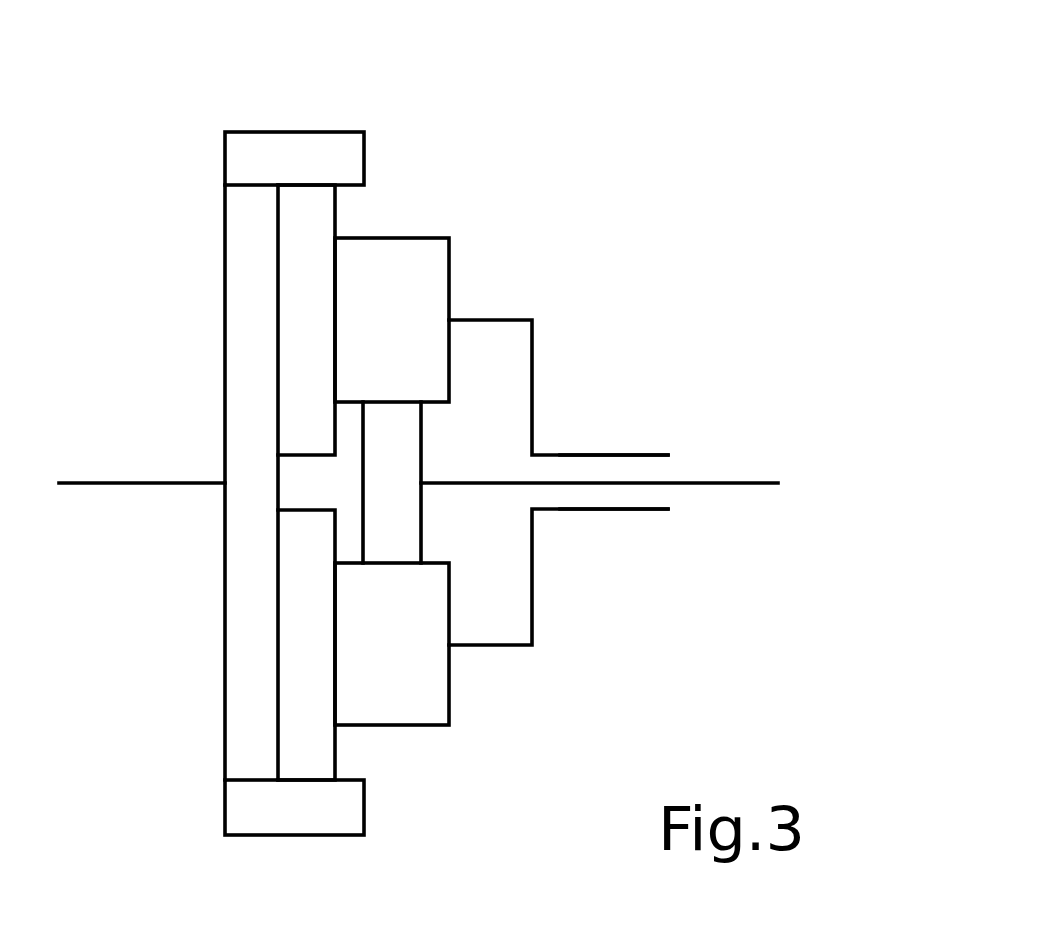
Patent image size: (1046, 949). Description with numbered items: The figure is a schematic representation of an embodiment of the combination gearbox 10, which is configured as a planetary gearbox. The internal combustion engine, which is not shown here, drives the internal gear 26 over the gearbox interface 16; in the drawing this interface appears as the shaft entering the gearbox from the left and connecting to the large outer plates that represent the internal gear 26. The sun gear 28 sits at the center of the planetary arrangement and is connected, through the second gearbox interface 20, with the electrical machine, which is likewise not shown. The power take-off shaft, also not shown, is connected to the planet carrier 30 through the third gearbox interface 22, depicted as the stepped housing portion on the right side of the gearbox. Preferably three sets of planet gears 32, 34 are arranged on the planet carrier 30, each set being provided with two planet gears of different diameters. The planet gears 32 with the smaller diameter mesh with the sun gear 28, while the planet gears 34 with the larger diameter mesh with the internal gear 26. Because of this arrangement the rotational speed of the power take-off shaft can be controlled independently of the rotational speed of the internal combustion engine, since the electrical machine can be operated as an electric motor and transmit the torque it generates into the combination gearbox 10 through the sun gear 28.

The combination gearbox 10 is at (758, 168).
The gearbox interface 16 is at (100, 483).
The second gearbox interface 20 is at (741, 484).
The third gearbox interface 22 is at (612, 455).
The internal gear 26 is at (291, 149).
The sun gear 28 is at (390, 527).
The planet carrier 30 is at (500, 319).
The planet gears 32 is at (413, 283).
The planet gears 34 is at (313, 217).